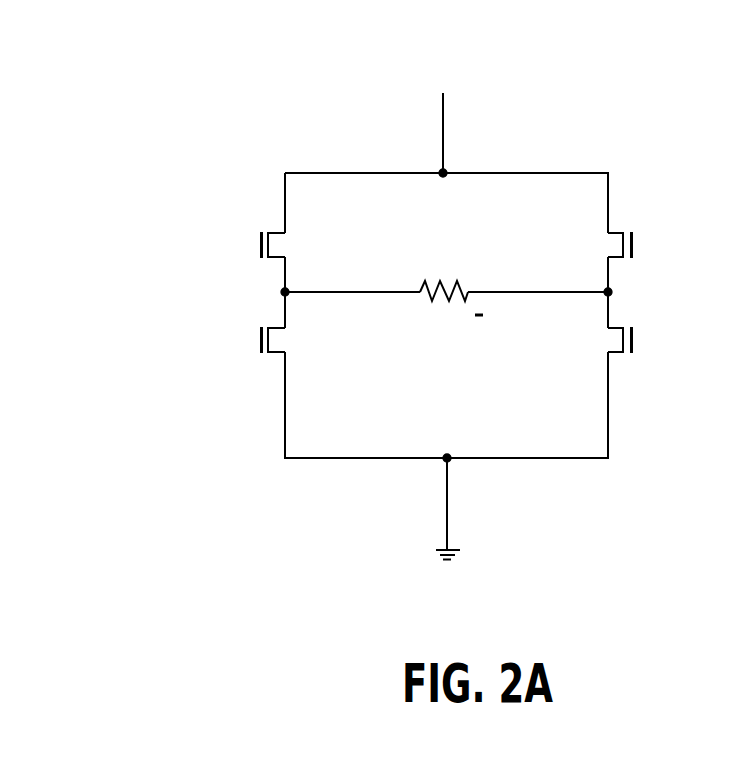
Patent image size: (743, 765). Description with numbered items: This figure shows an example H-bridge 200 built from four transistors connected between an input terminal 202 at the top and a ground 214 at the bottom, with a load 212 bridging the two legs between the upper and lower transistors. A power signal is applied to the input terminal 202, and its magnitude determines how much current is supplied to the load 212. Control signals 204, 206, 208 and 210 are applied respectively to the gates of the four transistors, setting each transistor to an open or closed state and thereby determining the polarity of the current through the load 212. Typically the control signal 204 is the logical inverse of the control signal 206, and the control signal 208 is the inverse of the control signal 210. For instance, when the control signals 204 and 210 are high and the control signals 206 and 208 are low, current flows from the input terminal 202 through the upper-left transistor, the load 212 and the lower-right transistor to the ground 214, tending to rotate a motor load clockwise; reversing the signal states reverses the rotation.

The H-bridge 200 is at (664, 117).
The input terminal 202 is at (443, 134).
The control signal 204 is at (250, 245).
The control signal 206 is at (250, 340).
The control signal 208 is at (643, 245).
The control signal 210 is at (643, 340).
The load 212 is at (450, 286).
The ground 214 is at (448, 500).